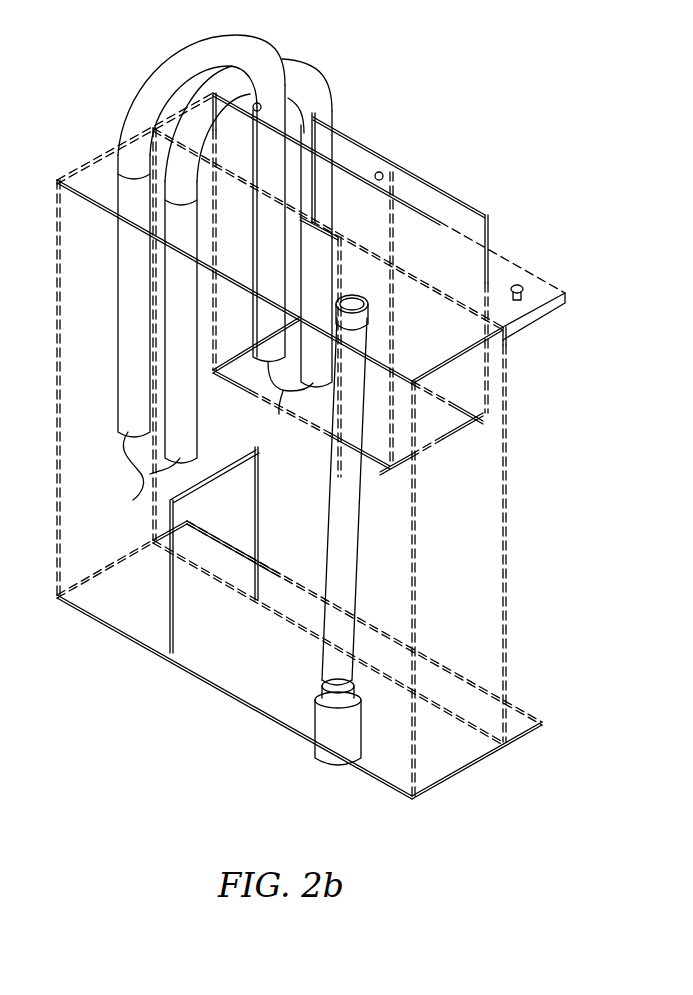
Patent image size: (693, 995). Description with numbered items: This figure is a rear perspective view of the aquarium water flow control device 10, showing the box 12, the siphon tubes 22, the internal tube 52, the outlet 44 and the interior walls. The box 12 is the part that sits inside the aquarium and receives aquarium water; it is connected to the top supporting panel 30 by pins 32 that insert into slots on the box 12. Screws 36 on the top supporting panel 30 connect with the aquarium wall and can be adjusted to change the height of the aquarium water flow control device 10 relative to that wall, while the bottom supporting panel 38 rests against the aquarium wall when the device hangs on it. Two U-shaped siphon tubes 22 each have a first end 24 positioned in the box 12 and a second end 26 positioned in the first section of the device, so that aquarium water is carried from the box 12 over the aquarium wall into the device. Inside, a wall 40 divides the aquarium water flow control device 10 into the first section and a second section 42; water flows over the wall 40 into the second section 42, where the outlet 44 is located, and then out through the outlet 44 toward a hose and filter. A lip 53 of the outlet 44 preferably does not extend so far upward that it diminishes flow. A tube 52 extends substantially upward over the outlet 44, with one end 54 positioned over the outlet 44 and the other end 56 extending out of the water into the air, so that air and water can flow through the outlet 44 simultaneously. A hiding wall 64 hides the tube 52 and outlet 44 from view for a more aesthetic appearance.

The aquarium water flow control device 10 is at (150, 675).
The box 12 is at (470, 194).
The siphon tubes 22 is at (182, 58).
The first end 24 is at (287, 399).
The second end 26 is at (136, 470).
The top supporting panel 30 is at (548, 300).
The pins 32 is at (262, 107).
The screws 36 is at (519, 286).
The bottom supporting panel 38 is at (530, 724).
The wall 40 is at (206, 598).
The second section 42 is at (228, 674).
The outlet 44 is at (364, 703).
The tube 52 is at (343, 588).
The lip 53 is at (321, 690).
The end 54 is at (346, 683).
The end 56 is at (352, 296).
The hiding wall 64 is at (289, 278).